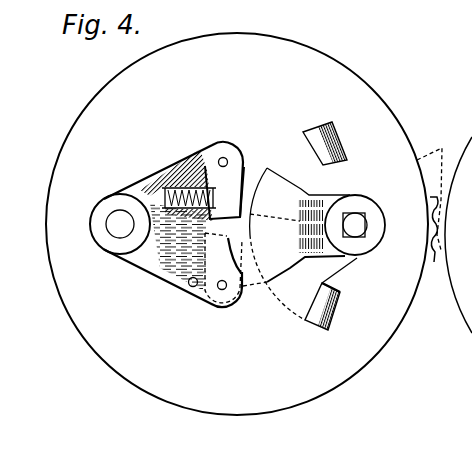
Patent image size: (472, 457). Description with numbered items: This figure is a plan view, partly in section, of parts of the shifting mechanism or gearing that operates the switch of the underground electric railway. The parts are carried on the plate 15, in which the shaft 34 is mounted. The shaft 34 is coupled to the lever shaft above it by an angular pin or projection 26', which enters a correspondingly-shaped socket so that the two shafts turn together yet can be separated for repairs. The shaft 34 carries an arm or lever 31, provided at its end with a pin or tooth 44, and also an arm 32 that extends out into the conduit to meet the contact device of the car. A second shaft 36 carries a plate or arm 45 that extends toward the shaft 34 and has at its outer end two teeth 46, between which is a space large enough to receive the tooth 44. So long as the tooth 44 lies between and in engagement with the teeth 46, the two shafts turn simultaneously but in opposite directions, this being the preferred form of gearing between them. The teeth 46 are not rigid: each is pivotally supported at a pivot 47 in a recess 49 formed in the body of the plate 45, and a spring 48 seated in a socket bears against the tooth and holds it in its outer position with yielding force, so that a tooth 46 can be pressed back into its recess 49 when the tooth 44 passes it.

The plate 15 is at (259, 224).
The angular pin or projection 26' is at (378, 213).
The arm or lever 31 is at (294, 265).
The arm 32 is at (433, 248).
The shaft 34 is at (357, 239).
The shaft 36 is at (111, 233).
The pin or tooth 44 is at (240, 224).
The plate or arm 45 is at (158, 281).
The teeth 46 is at (264, 252).
The pivot 47 is at (227, 158).
The springs 48 is at (170, 186).
The recesses 49 is at (206, 166).